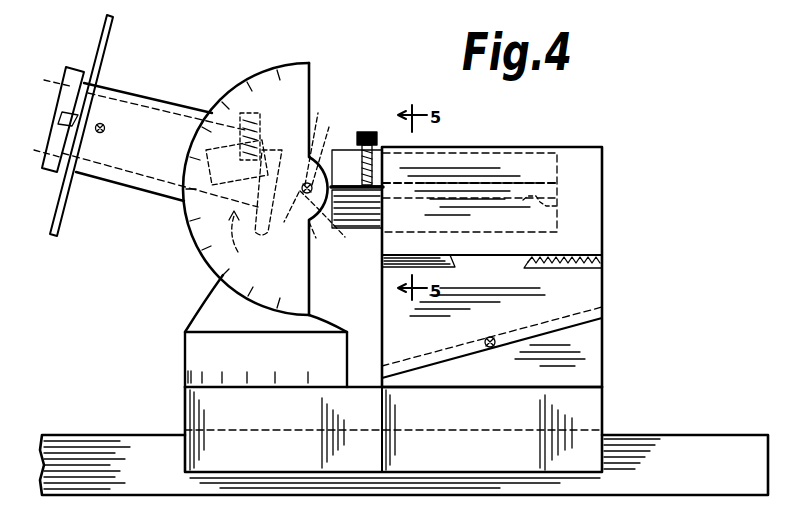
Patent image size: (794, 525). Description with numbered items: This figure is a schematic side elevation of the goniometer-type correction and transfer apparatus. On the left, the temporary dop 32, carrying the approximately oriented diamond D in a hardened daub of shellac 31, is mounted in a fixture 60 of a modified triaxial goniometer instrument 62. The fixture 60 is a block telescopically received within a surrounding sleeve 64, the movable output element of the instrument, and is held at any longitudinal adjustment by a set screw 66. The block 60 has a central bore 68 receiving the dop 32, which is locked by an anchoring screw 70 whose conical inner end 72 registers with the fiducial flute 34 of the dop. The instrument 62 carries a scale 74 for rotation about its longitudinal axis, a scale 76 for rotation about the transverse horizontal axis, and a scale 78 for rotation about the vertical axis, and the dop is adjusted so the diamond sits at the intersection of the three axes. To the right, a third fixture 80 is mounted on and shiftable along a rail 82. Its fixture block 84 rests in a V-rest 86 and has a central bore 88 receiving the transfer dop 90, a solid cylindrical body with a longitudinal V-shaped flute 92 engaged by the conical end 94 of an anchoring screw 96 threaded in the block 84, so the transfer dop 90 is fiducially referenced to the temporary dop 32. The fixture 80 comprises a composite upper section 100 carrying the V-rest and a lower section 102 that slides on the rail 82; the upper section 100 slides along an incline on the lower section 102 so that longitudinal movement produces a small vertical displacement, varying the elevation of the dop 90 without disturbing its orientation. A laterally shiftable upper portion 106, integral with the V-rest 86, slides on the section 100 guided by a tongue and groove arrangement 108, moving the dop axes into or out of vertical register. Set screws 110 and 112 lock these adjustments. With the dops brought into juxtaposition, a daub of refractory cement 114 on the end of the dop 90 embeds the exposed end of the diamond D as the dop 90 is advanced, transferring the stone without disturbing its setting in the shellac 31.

The hardened daub of shellac 31 is at (323, 239).
The temporary dop 32 is at (296, 213).
The fiducial flute 34 is at (305, 180).
The fixture 60 is at (247, 242).
The triaxial goniometer instrument 62 is at (250, 335).
The sleeve 64 is at (110, 172).
The set screw 66 is at (102, 124).
The central bore 68 is at (268, 203).
The anchoring screw 70 is at (260, 112).
The conical inner end 72 is at (250, 142).
The scale 74 is at (56, 212).
The scale 76 is at (243, 86).
The scale 78 is at (185, 378).
The third fixture 80 is at (562, 309).
The rail 82 is at (694, 435).
The fixture block 84 is at (555, 152).
The V-rest 86 is at (590, 234).
The central bore 88 is at (548, 208).
The transfer dop 90 is at (333, 223).
The V-shaped groove or flute 92 is at (358, 186).
The conical end 94 is at (390, 188).
The anchoring screw 96 is at (367, 131).
The composite upper section 100 is at (604, 291).
The lower section 102 is at (590, 372).
The laterally shiftable upper portion 106 is at (590, 190).
The tongue and groove arrangement 108 is at (520, 262).
The set screw 110 is at (488, 348).
The set screw 112 is at (604, 263).
The refractory cement 114 is at (336, 154).
The diamond D is at (320, 120).